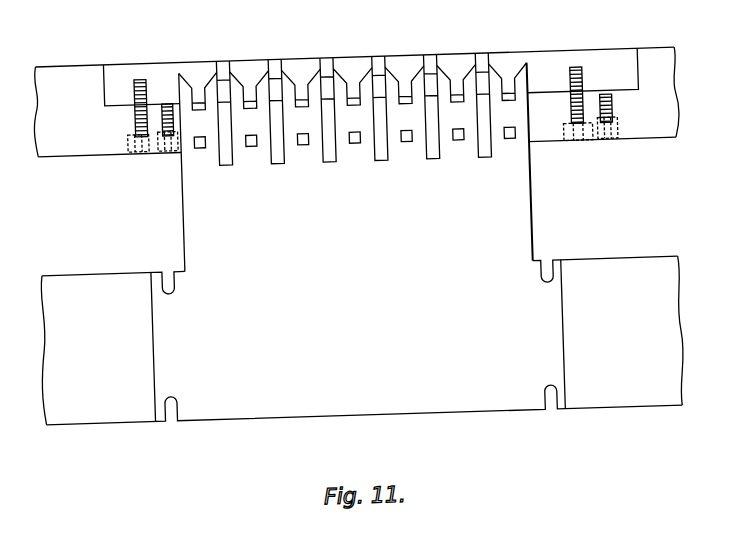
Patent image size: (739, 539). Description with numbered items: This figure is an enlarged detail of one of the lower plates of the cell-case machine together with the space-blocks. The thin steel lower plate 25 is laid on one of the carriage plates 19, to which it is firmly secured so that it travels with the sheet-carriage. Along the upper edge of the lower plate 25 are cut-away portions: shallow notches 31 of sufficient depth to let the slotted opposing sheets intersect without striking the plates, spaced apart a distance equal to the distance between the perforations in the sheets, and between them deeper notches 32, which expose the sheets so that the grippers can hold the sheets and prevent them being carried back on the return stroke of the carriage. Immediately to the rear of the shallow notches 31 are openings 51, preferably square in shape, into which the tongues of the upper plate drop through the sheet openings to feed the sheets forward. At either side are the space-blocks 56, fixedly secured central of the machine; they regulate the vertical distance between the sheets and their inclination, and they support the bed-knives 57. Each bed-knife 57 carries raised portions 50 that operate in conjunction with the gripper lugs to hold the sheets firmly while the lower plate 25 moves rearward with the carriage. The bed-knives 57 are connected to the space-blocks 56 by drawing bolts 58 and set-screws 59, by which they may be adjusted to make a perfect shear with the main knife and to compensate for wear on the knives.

The plate 19 is at (623, 332).
The lower plate 25 is at (359, 241).
The shallow notch 31 is at (308, 81).
The deep notch 32 is at (279, 154).
The raised portion 50 is at (228, 62).
The opening 51 is at (357, 145).
The space-block 56 is at (356, 104).
The bed-knife 57 is at (405, 70).
The drawing bolt 58 is at (139, 116).
The set-screw 59 is at (169, 146).